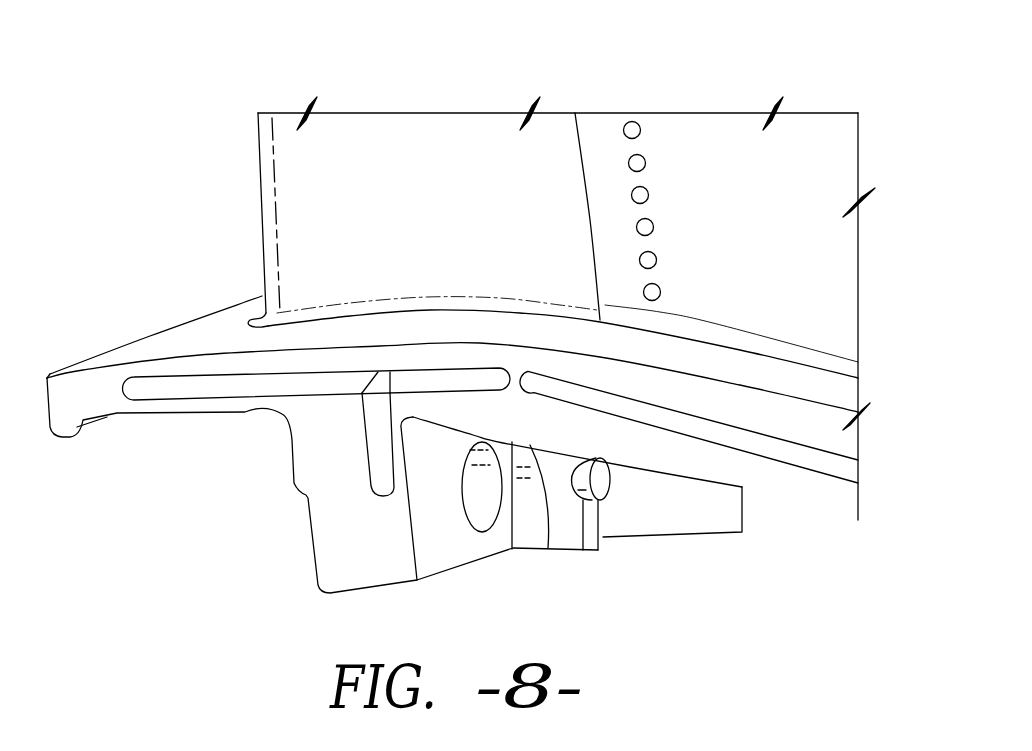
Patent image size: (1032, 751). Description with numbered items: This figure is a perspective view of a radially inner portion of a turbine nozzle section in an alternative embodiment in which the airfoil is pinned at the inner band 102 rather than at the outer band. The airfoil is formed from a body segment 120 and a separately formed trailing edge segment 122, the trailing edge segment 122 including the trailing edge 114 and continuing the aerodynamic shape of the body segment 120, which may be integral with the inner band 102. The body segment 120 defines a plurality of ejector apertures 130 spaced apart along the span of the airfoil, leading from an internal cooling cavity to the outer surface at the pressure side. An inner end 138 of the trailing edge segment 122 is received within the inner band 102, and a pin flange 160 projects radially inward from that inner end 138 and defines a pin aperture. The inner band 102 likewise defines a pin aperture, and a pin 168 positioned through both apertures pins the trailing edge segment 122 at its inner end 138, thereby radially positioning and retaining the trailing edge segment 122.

The inner band 102 is at (452, 441).
The trailing edge 114 is at (522, 277).
The body segment 120 is at (812, 147).
The trailing edge segment 122 is at (393, 140).
The ejector aperture 130 is at (653, 220).
The inner end 138 is at (297, 358).
The pin flange 160 is at (568, 530).
The pin 168 is at (602, 478).